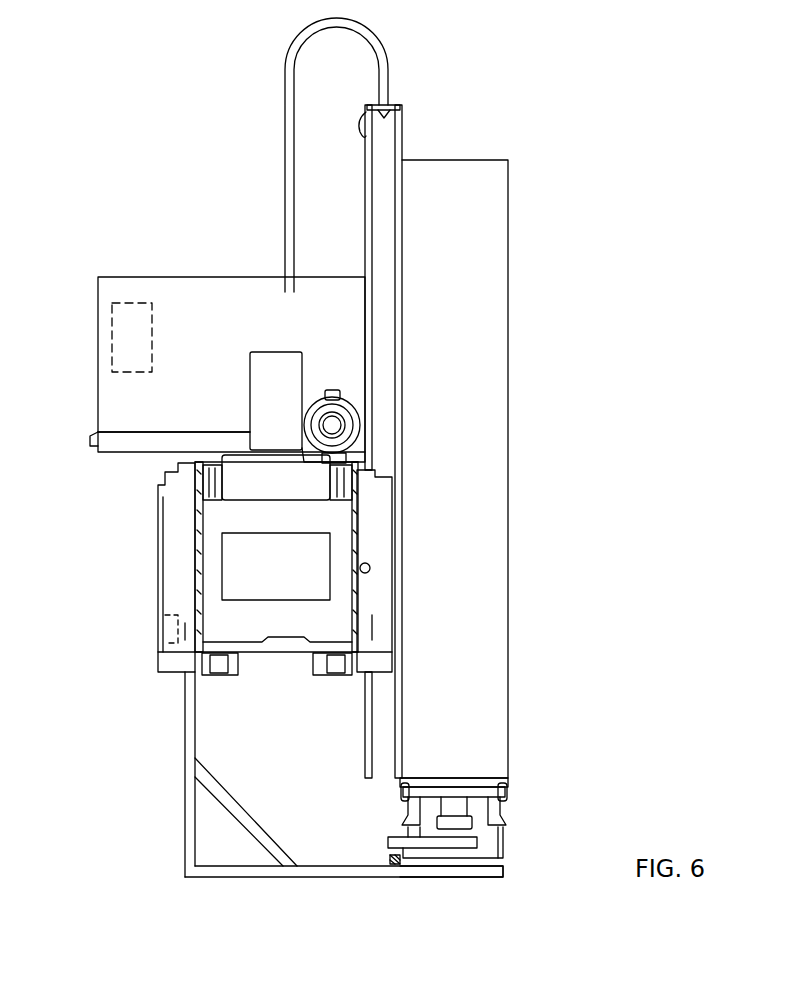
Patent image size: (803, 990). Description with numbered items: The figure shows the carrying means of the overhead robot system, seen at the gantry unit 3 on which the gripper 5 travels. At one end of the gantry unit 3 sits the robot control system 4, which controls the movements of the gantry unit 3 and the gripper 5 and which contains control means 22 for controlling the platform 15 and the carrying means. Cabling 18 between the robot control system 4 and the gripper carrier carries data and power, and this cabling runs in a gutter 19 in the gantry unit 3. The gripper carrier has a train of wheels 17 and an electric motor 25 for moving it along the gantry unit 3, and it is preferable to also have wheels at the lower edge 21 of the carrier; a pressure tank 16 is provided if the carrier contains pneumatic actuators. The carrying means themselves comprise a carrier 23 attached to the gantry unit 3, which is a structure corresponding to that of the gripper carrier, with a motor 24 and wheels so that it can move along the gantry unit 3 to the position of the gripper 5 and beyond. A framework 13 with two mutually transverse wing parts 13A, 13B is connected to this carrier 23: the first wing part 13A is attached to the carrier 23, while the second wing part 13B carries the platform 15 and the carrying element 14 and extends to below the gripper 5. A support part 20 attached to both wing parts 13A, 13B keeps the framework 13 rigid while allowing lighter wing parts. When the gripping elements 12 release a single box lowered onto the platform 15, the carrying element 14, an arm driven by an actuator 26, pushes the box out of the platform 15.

The gantry unit 3 is at (266, 529).
The robot control system 4 is at (221, 276).
The gripper 5 is at (496, 306).
The gripping elements 12 is at (506, 791).
The framework 13 is at (271, 827).
The first wing part 13A is at (183, 810).
The second wing part 13B is at (323, 878).
The carrying element 14 is at (426, 843).
The platform 15 is at (472, 874).
The pressure tank 16 is at (338, 402).
The train of wheels 17 is at (196, 518).
The cabling 18 is at (276, 362).
The gutter 19 is at (248, 428).
The support part 20 is at (217, 787).
The lower edge 21 is at (242, 658).
The control means 22 is at (110, 338).
The carrier 23 is at (170, 572).
The motor 24 is at (172, 616).
The electric motor 25 is at (374, 648).
The actuator 26 is at (388, 858).